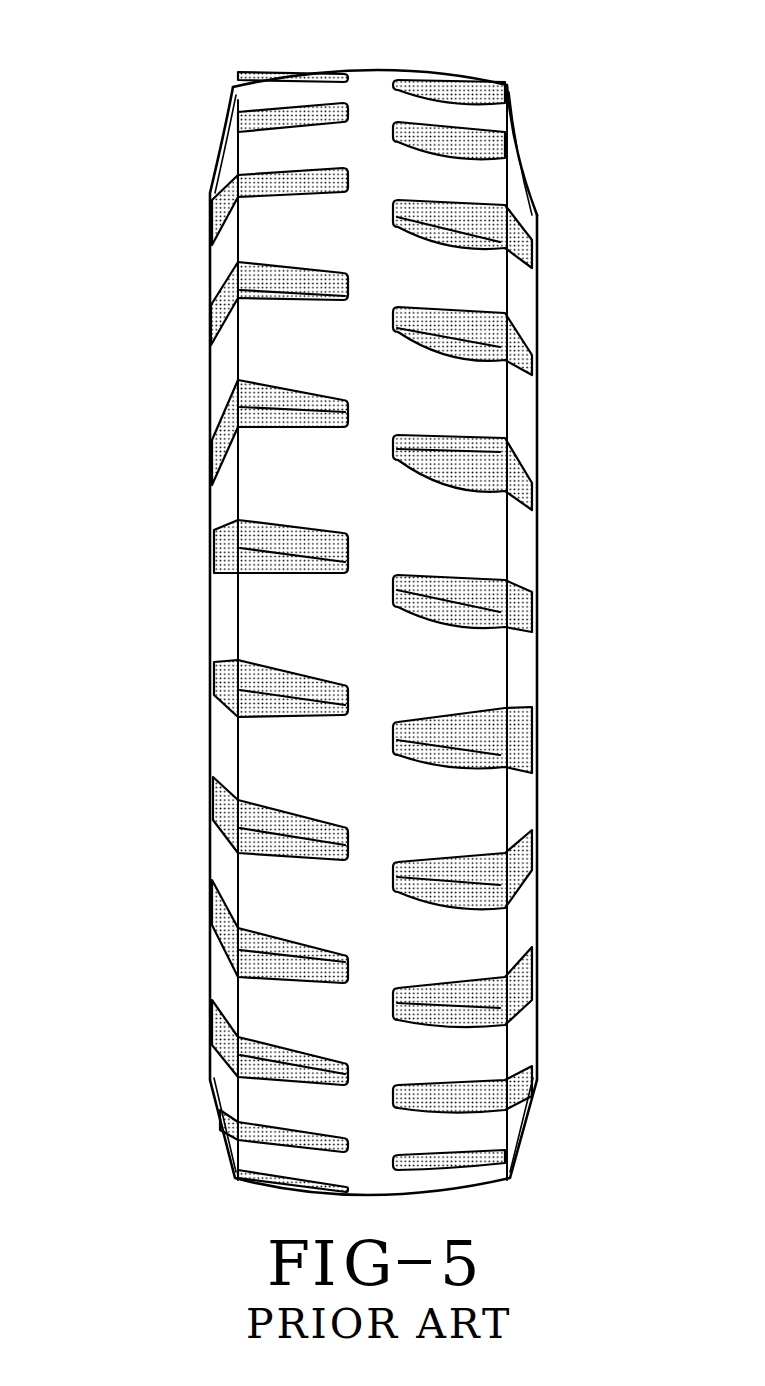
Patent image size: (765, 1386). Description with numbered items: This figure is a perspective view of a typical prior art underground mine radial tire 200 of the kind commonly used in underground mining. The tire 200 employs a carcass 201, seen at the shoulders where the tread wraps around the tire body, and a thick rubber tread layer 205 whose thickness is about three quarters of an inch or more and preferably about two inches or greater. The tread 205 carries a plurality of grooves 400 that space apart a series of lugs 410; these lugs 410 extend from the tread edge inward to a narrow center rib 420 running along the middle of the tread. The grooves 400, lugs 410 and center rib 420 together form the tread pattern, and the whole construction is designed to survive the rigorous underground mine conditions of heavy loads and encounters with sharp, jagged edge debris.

The underground mine radial tire 200 is at (166, 753).
The carcass 201 is at (537, 348).
The rubber tread layer 205 is at (272, 482).
The grooves 400 is at (245, 190).
The lugs 410 is at (262, 610).
The center rib 420 is at (367, 143).